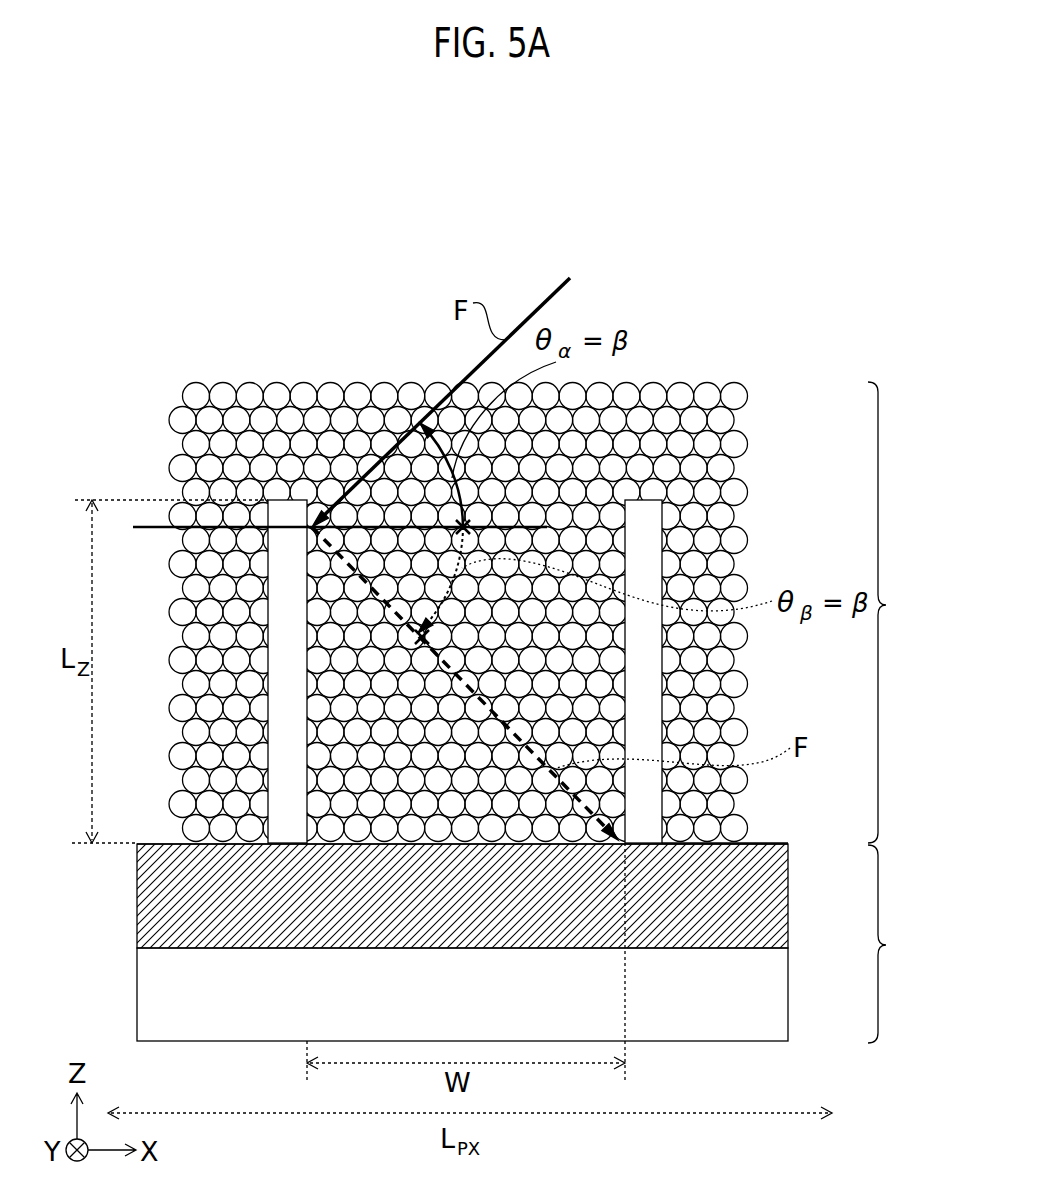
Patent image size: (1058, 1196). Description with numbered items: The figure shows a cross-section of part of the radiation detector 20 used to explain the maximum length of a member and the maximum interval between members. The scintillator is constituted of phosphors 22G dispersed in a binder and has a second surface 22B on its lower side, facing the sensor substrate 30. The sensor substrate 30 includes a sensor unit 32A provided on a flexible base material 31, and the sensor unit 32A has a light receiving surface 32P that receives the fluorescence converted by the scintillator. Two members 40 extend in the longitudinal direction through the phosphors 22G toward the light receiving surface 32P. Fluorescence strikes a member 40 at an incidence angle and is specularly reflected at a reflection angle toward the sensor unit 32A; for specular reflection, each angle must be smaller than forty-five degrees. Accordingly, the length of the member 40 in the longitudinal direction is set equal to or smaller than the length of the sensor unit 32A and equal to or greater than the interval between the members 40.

The radiation detector 20 is at (897, 612).
The phosphor 22G is at (735, 442).
The second surface 22B is at (711, 860).
The sensor substrate 30 is at (897, 944).
The base material 31 is at (765, 987).
The sensor unit 32A is at (765, 893).
The light receiving surface 32P is at (778, 830).
The member 40 is at (292, 703).